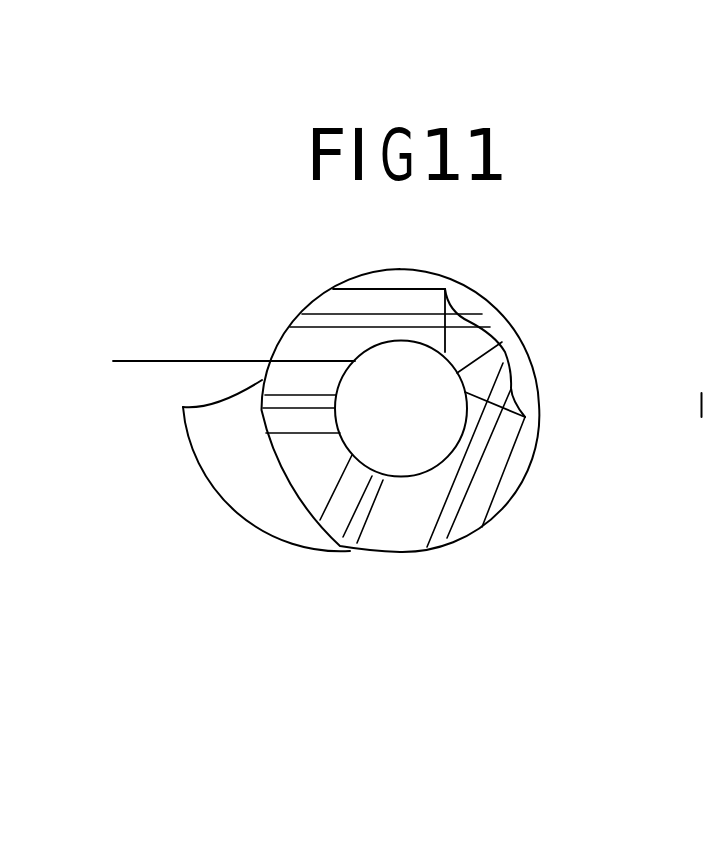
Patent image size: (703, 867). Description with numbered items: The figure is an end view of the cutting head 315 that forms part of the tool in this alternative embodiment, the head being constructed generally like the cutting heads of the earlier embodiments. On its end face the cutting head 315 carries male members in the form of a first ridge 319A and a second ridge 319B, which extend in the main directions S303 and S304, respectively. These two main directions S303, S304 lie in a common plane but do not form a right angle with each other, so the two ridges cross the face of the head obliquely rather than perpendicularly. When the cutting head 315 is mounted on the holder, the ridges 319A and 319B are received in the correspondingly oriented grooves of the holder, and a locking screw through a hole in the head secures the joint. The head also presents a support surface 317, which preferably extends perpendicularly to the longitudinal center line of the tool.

The cutting head 315 is at (495, 275).
The second ridge 319B is at (317, 342).
The first ridge 319A is at (417, 525).
The support surface 317 is at (320, 468).
The main direction of the second ridge S304 is at (203, 358).
The main direction of the first ridge S303 is at (423, 472).